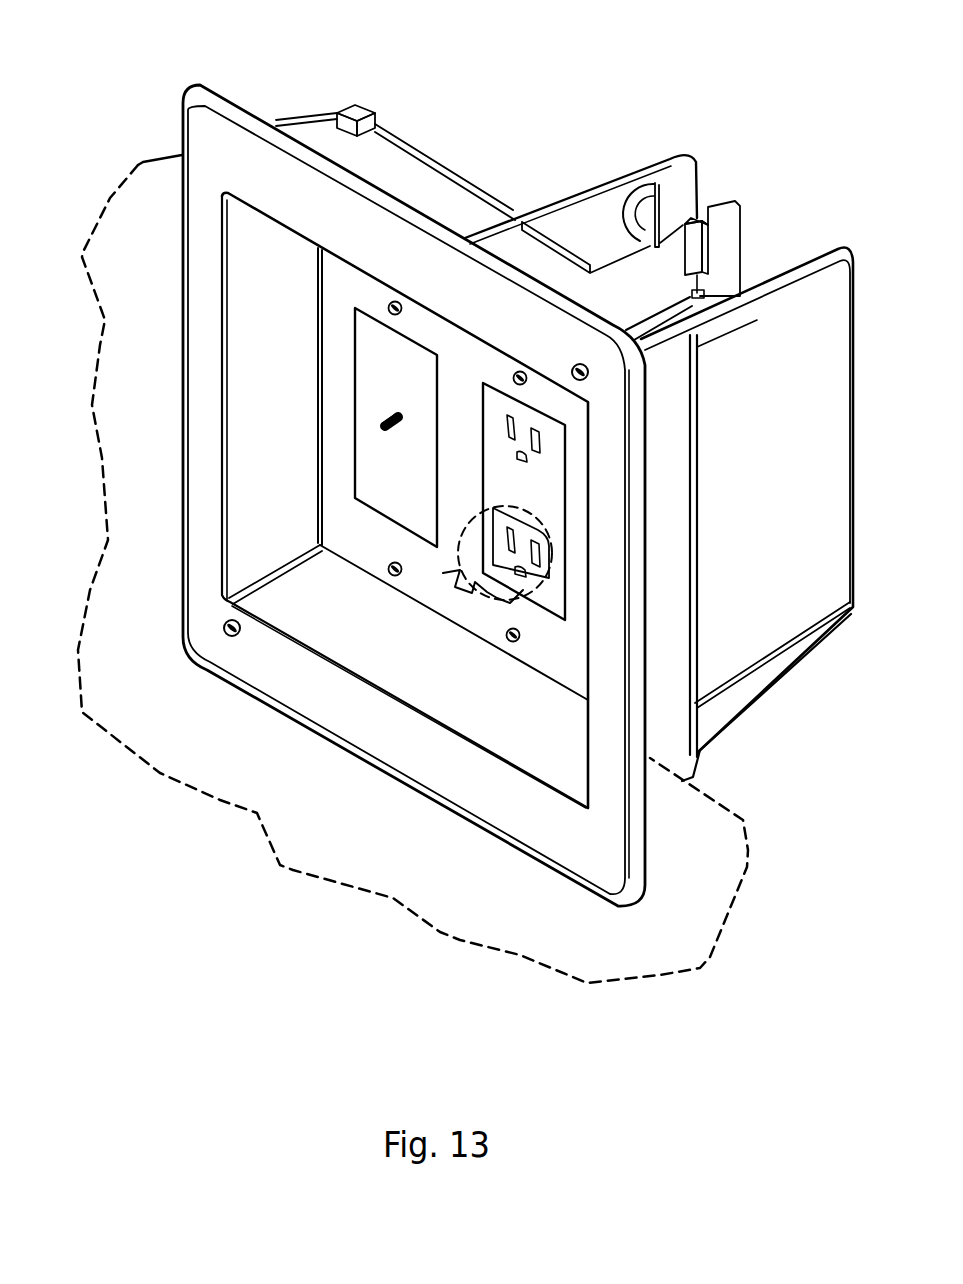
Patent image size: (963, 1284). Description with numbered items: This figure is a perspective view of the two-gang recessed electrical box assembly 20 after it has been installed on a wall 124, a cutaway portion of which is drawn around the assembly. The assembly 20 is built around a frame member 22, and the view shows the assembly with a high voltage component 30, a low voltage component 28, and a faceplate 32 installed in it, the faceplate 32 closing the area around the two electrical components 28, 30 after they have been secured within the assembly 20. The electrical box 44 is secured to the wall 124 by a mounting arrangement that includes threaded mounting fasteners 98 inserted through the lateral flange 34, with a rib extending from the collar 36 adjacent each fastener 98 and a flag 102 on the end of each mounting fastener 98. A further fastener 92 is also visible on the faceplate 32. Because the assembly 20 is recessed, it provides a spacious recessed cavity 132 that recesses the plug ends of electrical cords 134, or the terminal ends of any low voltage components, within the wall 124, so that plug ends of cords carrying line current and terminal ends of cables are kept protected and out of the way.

The two-gang recessed electrical box assembly 20 is at (128, 89).
The frame member 22 is at (447, 167).
The low voltage component 28 is at (412, 396).
The high voltage component 30 is at (537, 496).
The faceplate 32 is at (475, 366).
The lateral flange 34 is at (315, 204).
The collar 36 is at (288, 321).
The electrical box 44 is at (782, 467).
The cover plate screw 92 is at (512, 639).
The threaded mounting fastener 98 is at (588, 382).
The flag 102 is at (705, 215).
The wall 124 is at (158, 271).
The recessed cavity 132 is at (282, 407).
The electrical cords 134 is at (548, 578).